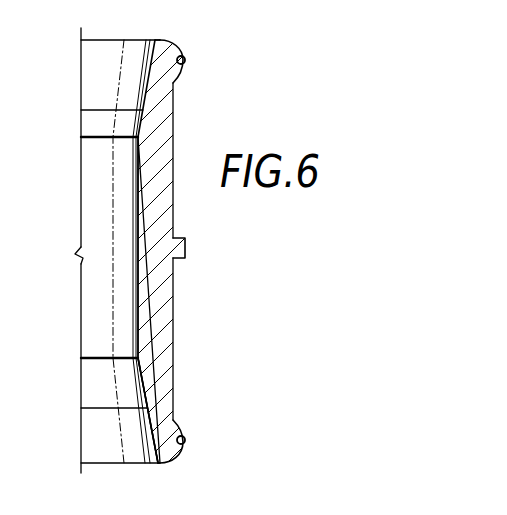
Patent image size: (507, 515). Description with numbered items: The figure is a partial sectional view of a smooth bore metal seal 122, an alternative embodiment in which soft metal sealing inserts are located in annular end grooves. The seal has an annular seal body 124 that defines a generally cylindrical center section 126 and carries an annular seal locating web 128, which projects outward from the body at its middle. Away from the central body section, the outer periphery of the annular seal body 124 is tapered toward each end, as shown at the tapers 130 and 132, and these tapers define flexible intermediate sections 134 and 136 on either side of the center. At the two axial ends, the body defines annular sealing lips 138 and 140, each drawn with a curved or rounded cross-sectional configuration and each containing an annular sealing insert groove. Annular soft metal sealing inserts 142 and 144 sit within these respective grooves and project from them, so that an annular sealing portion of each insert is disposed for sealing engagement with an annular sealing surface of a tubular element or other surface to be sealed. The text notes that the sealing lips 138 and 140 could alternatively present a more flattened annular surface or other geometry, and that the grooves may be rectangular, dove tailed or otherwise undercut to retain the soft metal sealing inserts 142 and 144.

The smooth bore metal seal 122 is at (103, 91).
The annular seal body 124 is at (142, 337).
The generally cylindrical center section 126 is at (142, 287).
The annular seal locating web 128 is at (187, 247).
The tapered outer periphery 130 is at (115, 109).
The tapered outer periphery 132 is at (135, 407).
The flexible intermediate section 134 is at (164, 100).
The flexible intermediate section 136 is at (167, 400).
The annular sealing lip 138 is at (178, 46).
The annular sealing lip 140 is at (175, 459).
The annular soft metal sealing insert 142 is at (186, 60).
The annular soft metal sealing insert 144 is at (186, 440).